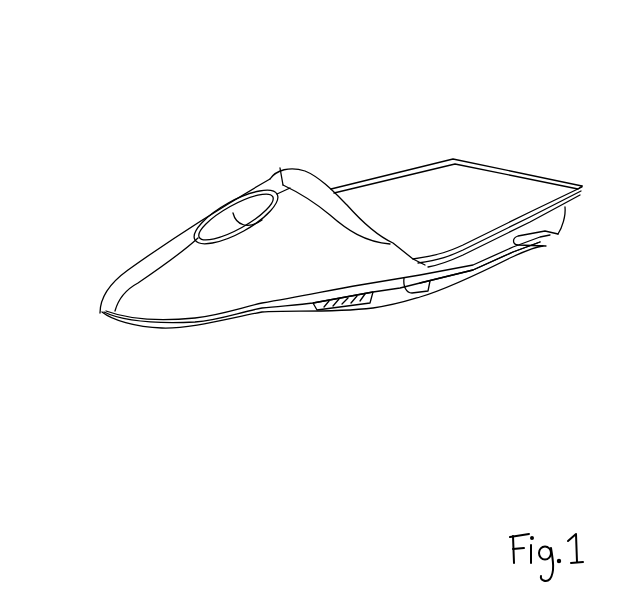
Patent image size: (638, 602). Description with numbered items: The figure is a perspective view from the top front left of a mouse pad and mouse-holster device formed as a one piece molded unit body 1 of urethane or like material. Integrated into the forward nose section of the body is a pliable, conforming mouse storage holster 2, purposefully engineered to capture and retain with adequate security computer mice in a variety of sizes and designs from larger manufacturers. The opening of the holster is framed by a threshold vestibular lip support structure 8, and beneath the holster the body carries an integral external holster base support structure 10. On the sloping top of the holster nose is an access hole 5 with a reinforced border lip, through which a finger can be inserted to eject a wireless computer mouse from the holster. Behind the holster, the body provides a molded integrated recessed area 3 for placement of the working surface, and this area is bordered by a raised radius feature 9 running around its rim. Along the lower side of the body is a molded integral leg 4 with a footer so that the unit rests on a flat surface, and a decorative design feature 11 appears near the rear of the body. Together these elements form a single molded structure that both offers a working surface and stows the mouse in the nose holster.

The one piece molded unit body 1 is at (113, 312).
The mouse storage holster 2 is at (280, 266).
The recessed area for working surface 3 is at (410, 197).
The leg with footer 4 is at (466, 268).
The access hole 5 is at (224, 208).
The threshold vestibular lip support structure 8 is at (281, 177).
The raised radius feature 9 is at (510, 173).
The external holster base support structure 10 is at (300, 313).
The decorative design feature 11 is at (524, 238).